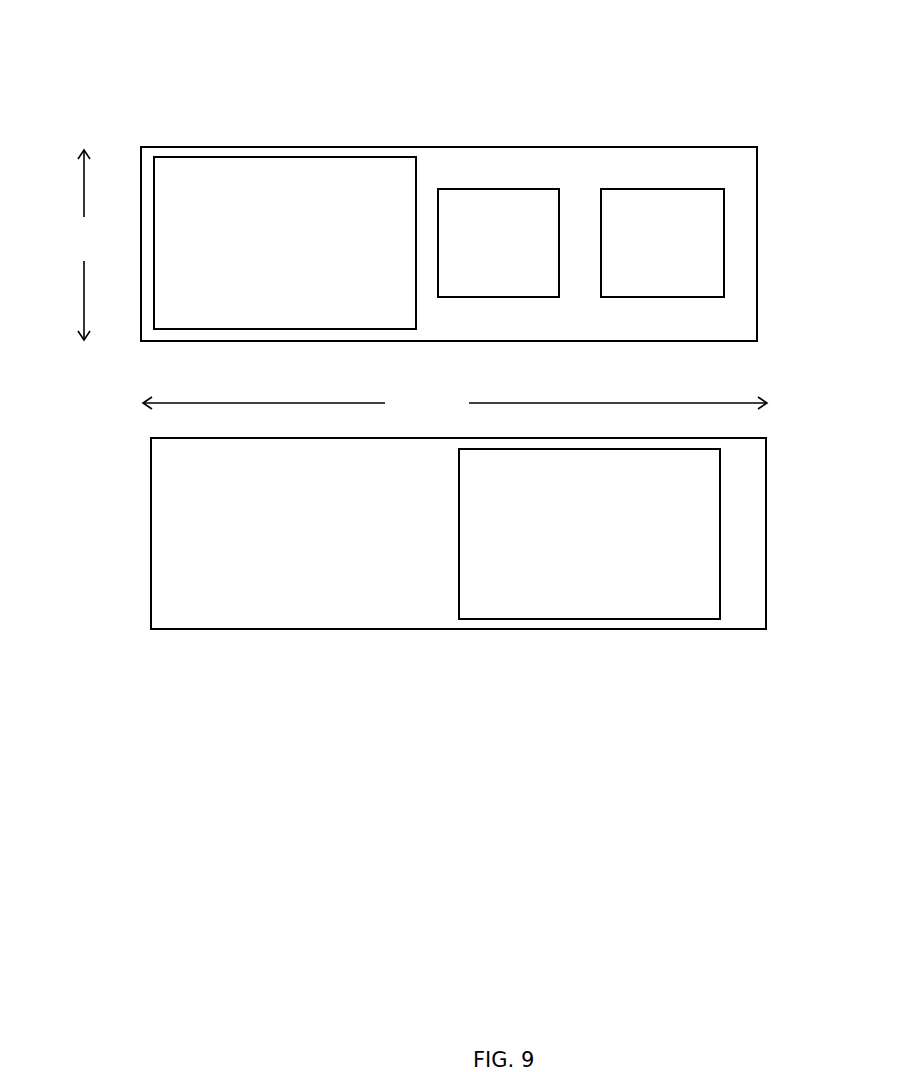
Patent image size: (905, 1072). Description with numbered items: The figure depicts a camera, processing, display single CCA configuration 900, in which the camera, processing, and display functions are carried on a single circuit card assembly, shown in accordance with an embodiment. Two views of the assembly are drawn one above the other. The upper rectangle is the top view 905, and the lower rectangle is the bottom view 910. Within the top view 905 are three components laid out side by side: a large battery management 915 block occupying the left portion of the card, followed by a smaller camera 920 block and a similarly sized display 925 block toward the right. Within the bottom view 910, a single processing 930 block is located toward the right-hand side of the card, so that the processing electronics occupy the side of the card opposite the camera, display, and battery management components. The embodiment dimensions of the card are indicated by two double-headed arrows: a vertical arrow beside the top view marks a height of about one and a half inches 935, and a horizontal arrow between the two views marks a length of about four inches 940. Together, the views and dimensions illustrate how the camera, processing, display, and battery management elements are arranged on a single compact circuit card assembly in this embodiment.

The camera, processing, display single CCA configuration 900 is at (63, 45).
The top view 905 is at (479, 244).
The bottom view 910 is at (492, 533).
The battery management 915 is at (285, 243).
The camera 920 is at (498, 243).
The display 925 is at (662, 243).
The processing 930 is at (589, 534).
The dimension of about 1.5 inches 935 is at (83, 245).
The dimension of about 4.0 inches 940 is at (455, 404).